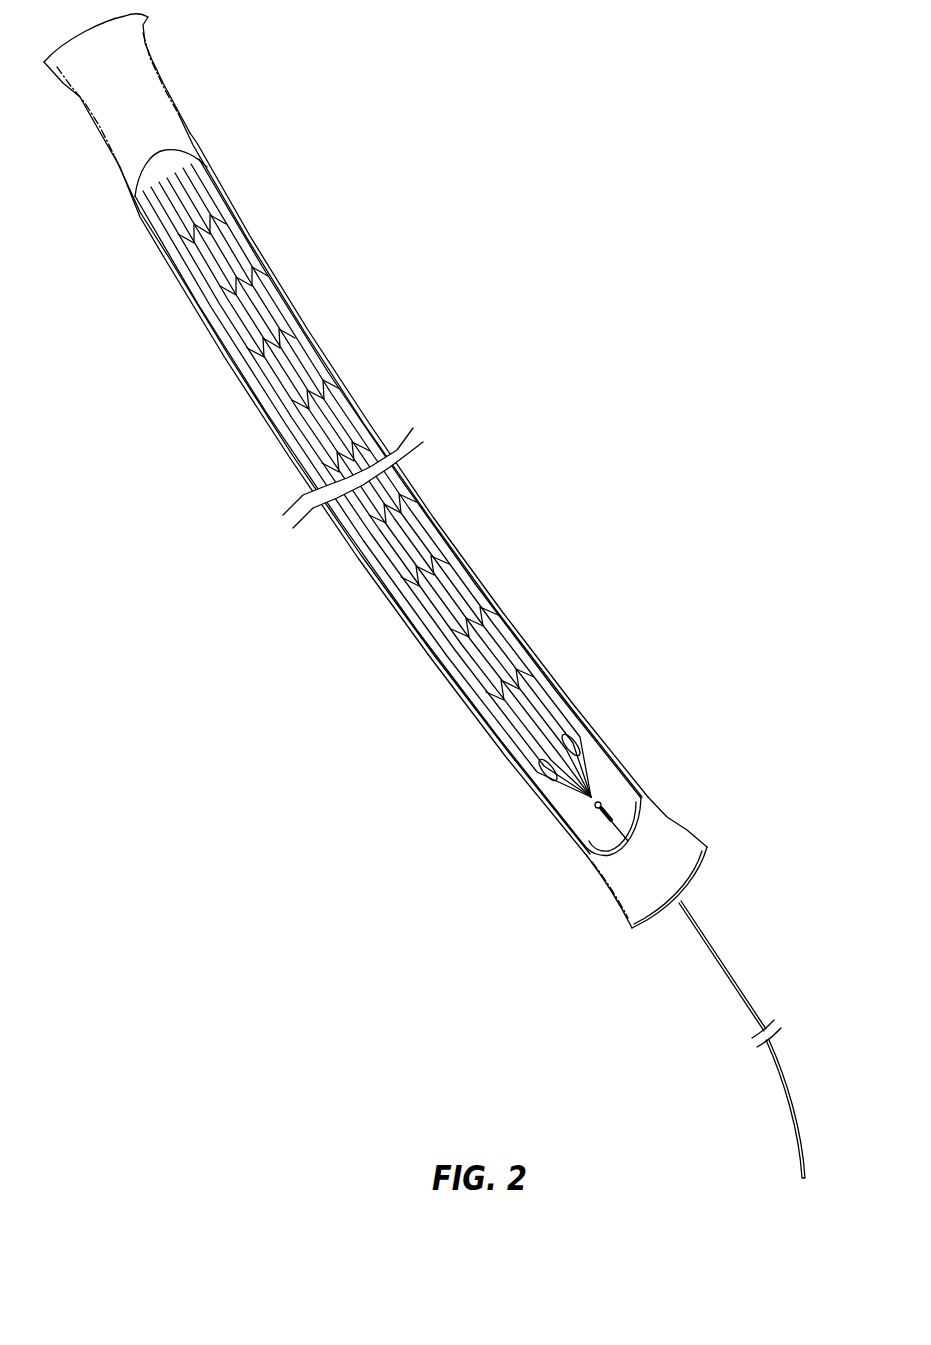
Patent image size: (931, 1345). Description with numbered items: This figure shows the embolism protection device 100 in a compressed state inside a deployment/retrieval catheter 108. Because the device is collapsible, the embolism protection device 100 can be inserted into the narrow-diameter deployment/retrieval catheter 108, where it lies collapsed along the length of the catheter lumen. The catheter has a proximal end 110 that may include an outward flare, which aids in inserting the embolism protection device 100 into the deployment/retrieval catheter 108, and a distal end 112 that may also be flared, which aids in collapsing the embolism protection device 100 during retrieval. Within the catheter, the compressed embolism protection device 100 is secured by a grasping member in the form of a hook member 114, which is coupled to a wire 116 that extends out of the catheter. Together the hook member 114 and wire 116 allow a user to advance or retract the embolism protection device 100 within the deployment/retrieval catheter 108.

The embolism protection device 100 is at (325, 390).
The deployment/retrieval catheter 108 is at (267, 260).
The proximal end 110 is at (710, 845).
The distal end 112 is at (150, 20).
The hook member 114 is at (584, 760).
The wire 116 is at (762, 1012).